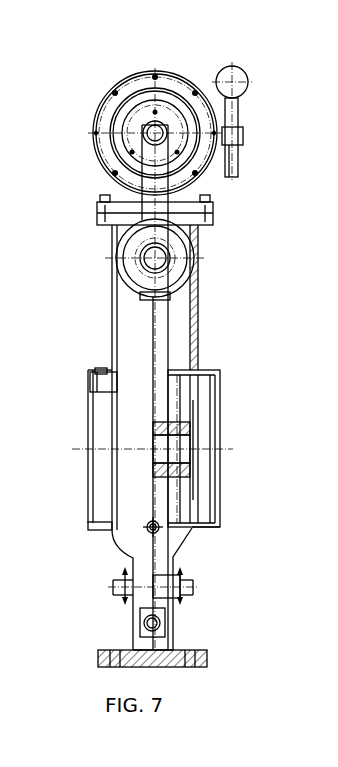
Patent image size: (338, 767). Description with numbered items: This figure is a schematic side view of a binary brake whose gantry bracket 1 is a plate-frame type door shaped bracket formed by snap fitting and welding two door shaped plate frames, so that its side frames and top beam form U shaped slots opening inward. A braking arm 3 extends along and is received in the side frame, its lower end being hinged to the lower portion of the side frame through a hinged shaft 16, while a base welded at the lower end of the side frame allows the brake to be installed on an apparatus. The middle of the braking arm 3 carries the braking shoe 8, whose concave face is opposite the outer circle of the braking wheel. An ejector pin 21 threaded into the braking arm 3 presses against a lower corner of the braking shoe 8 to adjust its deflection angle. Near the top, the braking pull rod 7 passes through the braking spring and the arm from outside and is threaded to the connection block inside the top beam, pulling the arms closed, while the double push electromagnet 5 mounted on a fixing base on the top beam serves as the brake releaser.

The double push electromagnet 5 is at (120, 88).
The braking pull rod 7 is at (150, 253).
The gantry bracket 1 is at (120, 322).
The braking arm 3 is at (163, 324).
The braking shoe 8 is at (102, 407).
The ejector pin 21 is at (145, 525).
The hinged shaft 16 is at (122, 573).